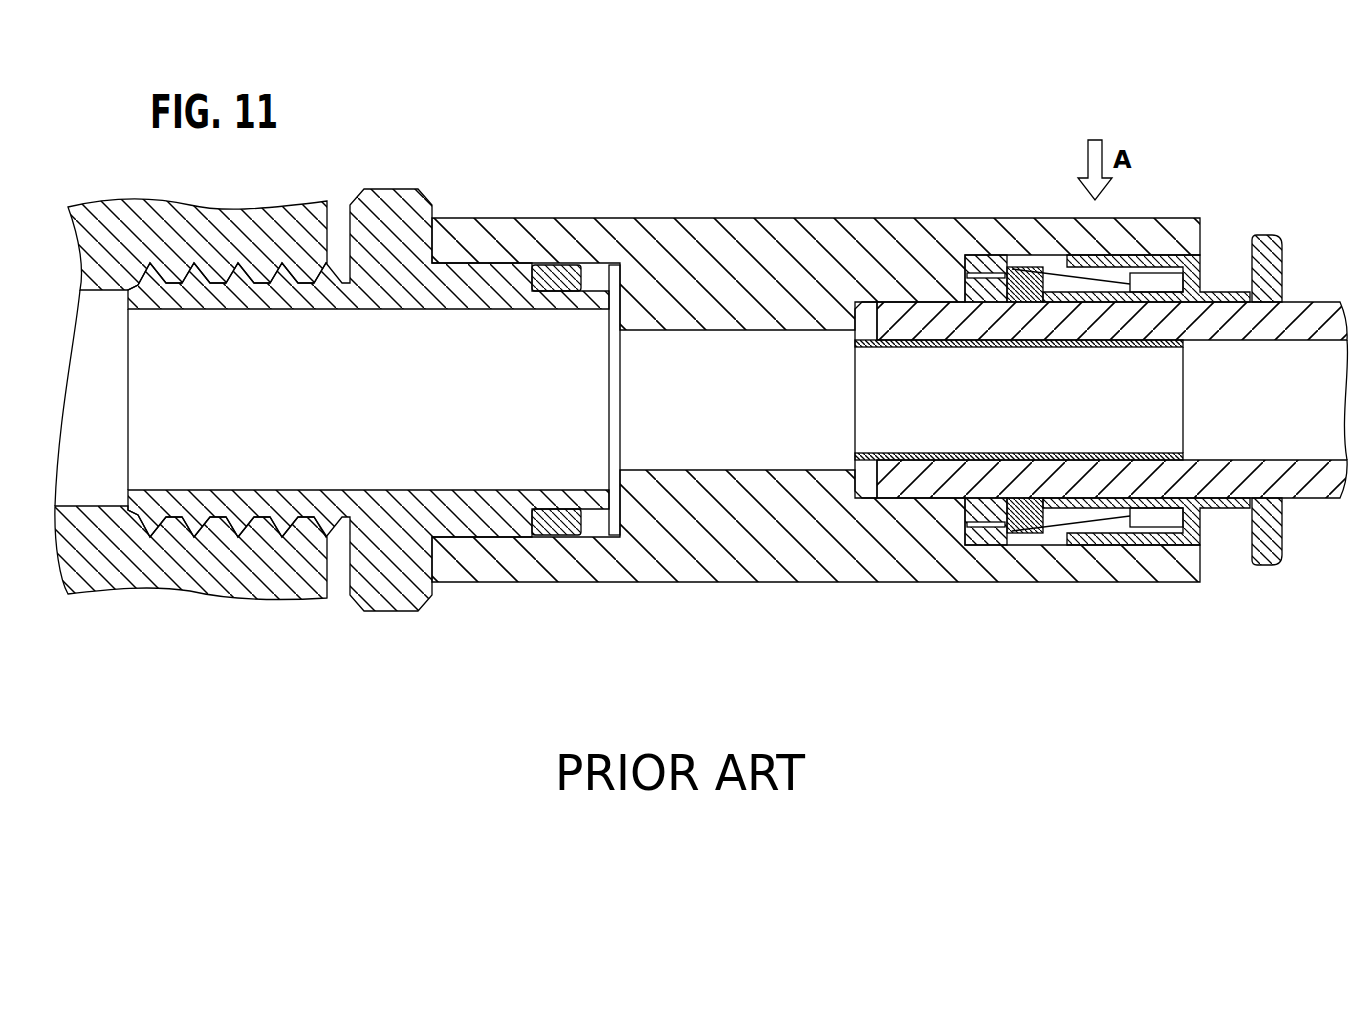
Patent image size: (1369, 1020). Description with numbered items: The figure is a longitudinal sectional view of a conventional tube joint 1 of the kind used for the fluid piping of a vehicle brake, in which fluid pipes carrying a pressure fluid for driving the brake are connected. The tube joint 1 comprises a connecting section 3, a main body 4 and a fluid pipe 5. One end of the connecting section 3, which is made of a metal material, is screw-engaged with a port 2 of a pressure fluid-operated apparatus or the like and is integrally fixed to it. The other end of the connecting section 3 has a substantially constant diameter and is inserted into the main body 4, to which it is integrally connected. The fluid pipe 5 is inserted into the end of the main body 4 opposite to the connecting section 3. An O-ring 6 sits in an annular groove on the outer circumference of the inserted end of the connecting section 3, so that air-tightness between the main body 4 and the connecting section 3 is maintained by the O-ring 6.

The tube joint 1 is at (1257, 167).
The port 2 is at (95, 500).
The connecting section 3 is at (385, 216).
The main body 4 is at (742, 228).
The fluid pipe 5 is at (1315, 316).
The O-ring 6 is at (556, 262).